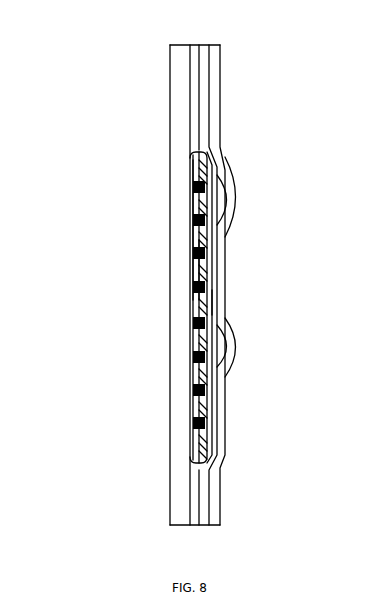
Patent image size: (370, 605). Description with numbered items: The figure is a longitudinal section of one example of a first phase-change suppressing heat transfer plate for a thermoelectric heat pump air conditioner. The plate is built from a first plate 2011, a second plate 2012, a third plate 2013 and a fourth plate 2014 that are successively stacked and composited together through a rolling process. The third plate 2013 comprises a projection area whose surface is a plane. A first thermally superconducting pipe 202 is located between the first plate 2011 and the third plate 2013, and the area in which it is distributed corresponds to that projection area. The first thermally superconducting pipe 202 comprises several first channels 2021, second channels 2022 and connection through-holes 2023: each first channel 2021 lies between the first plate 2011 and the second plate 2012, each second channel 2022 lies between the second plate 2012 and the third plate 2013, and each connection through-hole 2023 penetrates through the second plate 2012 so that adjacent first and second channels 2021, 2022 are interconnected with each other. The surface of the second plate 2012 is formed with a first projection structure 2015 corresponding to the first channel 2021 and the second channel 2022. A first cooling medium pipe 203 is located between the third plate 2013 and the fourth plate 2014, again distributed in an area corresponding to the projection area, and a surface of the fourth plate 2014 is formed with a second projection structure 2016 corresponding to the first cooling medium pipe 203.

The first plate 2011 is at (180, 78).
The second plate 2012 is at (193, 75).
The third plate 2013 is at (203, 67).
The fourth plate 2014 is at (215, 70).
The first projection structure 2015 is at (207, 302).
The second projection structure 2016 is at (227, 235).
The first thermally superconducting pipe 202 is at (139, 292).
The first channel 2021 is at (196, 226).
The second channel 2022 is at (154, 289).
The connection through-hole 2023 is at (190, 183).
The first cooling medium pipe 203 is at (220, 352).